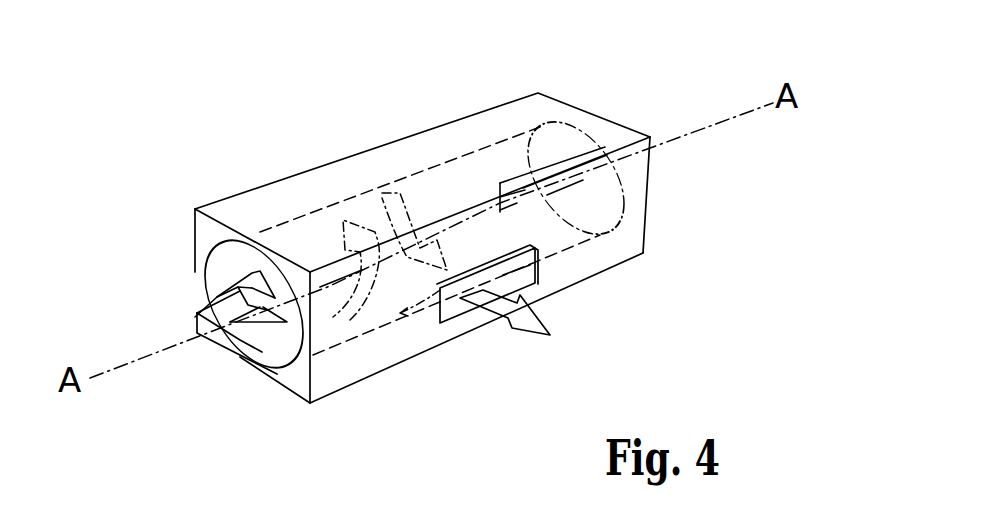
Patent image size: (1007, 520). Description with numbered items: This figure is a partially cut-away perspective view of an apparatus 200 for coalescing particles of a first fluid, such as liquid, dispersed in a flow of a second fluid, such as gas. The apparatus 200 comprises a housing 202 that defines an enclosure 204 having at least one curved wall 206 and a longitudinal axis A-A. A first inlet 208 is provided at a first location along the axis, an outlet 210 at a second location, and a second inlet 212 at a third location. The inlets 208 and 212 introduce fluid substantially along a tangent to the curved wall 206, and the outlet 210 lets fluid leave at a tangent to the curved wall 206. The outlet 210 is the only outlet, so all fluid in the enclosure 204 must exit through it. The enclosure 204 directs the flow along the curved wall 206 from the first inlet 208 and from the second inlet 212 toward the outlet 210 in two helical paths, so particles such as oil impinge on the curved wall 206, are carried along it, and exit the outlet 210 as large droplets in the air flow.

The apparatus 200 is at (650, 93).
The housing 202 is at (538, 93).
The enclosure 204 is at (277, 337).
The curved wall 206 is at (390, 180).
The first inlet 208 is at (207, 288).
The outlet 210 is at (520, 293).
The second inlet 212 is at (500, 185).